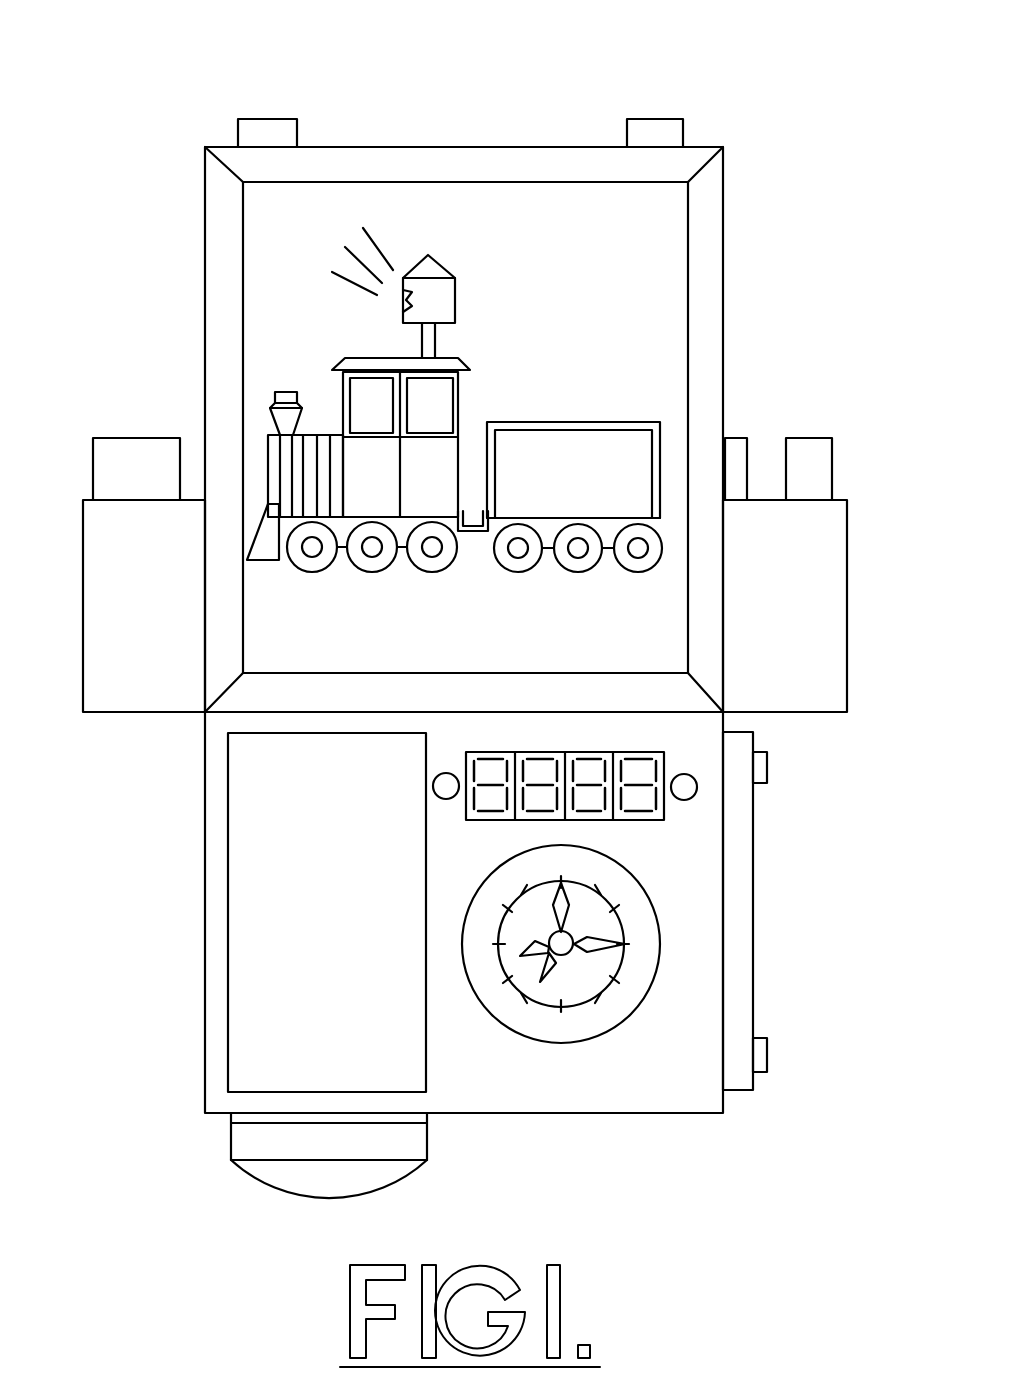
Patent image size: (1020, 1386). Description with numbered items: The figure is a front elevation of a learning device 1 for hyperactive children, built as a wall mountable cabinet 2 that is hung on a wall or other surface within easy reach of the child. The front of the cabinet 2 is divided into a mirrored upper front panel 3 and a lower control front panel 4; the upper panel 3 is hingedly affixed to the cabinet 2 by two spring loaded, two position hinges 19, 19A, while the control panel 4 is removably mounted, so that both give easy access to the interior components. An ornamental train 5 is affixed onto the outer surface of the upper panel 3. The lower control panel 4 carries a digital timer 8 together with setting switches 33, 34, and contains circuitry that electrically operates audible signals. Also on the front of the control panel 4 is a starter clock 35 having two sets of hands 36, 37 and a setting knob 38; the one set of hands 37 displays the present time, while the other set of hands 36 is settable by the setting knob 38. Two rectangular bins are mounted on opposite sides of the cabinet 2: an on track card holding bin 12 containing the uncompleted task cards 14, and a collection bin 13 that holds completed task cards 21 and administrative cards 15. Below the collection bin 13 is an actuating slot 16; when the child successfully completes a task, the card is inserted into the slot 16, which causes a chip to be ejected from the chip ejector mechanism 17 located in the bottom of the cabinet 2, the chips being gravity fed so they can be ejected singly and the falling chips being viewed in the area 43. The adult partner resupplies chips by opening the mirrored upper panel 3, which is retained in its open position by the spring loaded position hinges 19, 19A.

The learning device 1 is at (505, 360).
The wall mountable cabinet 2 is at (462, 147).
The mirrored upper front panel 3 is at (252, 233).
The lower control front panel 4 is at (710, 1082).
The ornamental train 5 is at (342, 358).
The digital timer 8 is at (660, 818).
The on track card holding bin 12 is at (142, 687).
The collection bin 13 is at (810, 692).
The uncompleted task cards 14 is at (120, 438).
The administrative cards 15 is at (730, 438).
The actuating slot 16 is at (753, 988).
The chip ejector mechanism 17 is at (243, 1140).
The spring loaded two position hinge 19 is at (247, 119).
The spring loaded two position hinge 19A is at (642, 119).
The completed task cards 21 is at (793, 438).
The setting switch 33 is at (433, 786).
The setting switch 34 is at (697, 787).
The starter clock 35 is at (598, 945).
The set of hands 36 is at (543, 973).
The set of hands 37 is at (602, 943).
The setting knob 38 is at (560, 955).
The area 43 is at (248, 977).